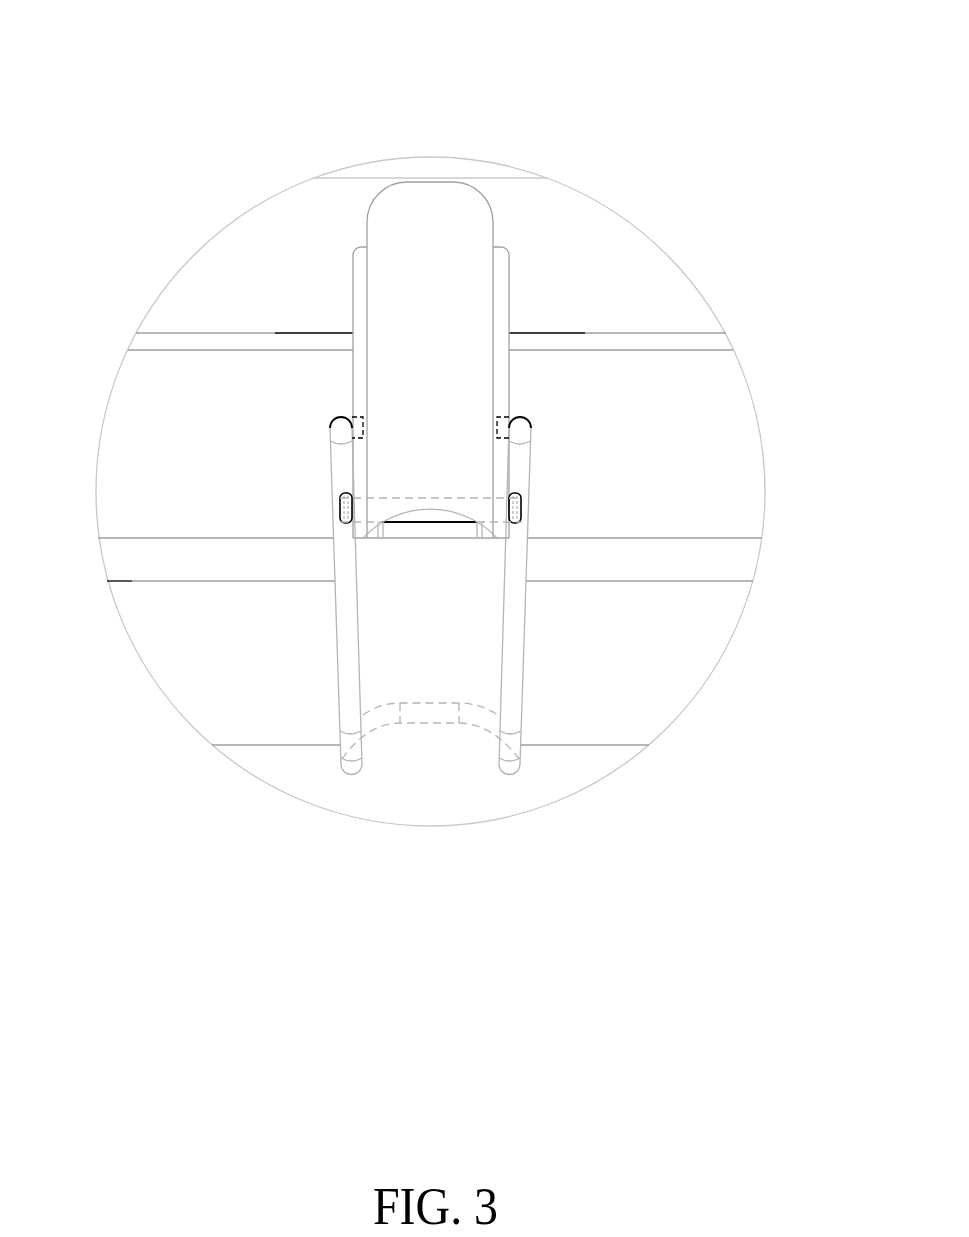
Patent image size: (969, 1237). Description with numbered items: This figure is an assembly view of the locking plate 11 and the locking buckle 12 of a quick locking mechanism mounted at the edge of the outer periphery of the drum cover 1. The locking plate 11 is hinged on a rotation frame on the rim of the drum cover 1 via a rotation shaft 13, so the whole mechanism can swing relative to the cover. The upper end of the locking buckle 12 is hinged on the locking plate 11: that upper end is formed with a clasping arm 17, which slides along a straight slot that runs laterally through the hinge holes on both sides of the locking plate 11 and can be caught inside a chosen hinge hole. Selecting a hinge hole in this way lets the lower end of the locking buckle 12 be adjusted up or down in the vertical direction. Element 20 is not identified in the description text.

The drum cover 1 is at (230, 287).
The locking plate 11 is at (445, 213).
The locking buckle 12 is at (513, 642).
The rotation shaft 13 is at (470, 517).
The clasping arm 17 is at (478, 505).
The base plate 20 is at (213, 690).